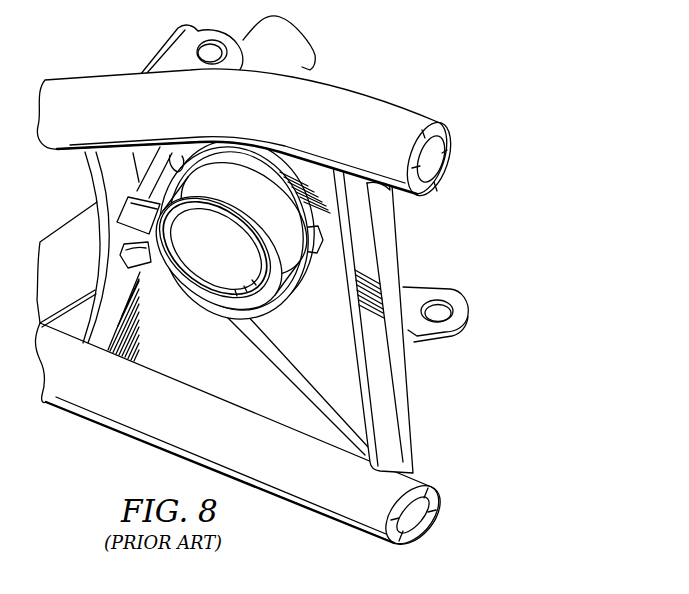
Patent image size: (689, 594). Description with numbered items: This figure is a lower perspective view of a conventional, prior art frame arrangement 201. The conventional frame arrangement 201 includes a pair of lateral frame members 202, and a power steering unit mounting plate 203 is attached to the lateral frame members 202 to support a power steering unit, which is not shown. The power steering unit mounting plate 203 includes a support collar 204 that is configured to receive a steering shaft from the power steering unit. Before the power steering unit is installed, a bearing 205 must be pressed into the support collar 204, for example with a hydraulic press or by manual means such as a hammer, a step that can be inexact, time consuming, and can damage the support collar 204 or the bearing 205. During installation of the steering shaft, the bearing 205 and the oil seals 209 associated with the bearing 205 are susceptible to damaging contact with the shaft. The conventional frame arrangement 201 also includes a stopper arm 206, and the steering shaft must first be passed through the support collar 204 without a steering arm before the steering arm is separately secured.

The conventional frame arrangement 201 is at (556, 196).
The lateral frame members 202 is at (387, 113).
The power steering unit mounting plate 203 is at (416, 394).
The support collar 204 is at (243, 202).
The bearing 205 is at (212, 257).
The stopper arm 206 is at (123, 212).
The oil seals 209 is at (208, 293).